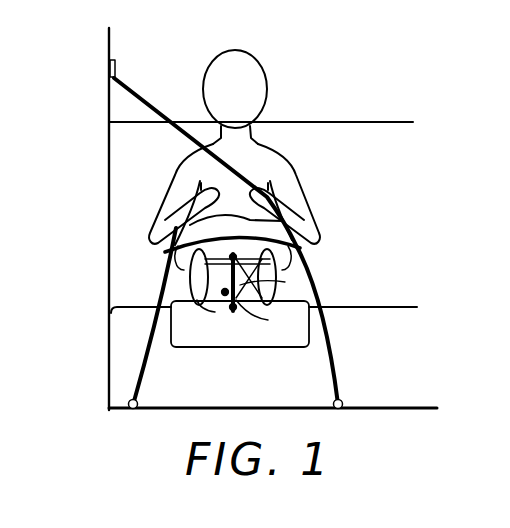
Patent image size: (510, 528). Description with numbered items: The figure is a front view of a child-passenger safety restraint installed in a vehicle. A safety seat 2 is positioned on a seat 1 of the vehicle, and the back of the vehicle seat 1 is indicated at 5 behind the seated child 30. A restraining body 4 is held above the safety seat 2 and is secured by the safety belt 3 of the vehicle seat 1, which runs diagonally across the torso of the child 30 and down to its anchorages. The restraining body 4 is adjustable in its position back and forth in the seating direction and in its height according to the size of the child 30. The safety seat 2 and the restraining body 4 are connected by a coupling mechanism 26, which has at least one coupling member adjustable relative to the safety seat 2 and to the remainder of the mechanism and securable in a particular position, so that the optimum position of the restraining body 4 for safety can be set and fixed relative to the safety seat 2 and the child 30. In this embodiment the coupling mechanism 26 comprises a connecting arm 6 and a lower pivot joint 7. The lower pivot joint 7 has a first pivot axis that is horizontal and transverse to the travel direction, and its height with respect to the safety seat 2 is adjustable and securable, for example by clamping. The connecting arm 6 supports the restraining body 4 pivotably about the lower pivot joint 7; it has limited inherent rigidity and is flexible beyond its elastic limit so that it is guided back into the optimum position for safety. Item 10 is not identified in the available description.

The seat of a vehicle 1 is at (123, 380).
The safety seat 2 is at (198, 338).
The safety belt 3 is at (143, 99).
The restraining body 4 is at (240, 213).
The back of the vehicle seat 5 is at (128, 209).
The connecting arm 6 is at (288, 270).
The lower pivot joint 7 is at (238, 305).
The lap belt section 10 is at (168, 251).
The coupling mechanism 26 is at (222, 312).
The child 30 is at (293, 183).